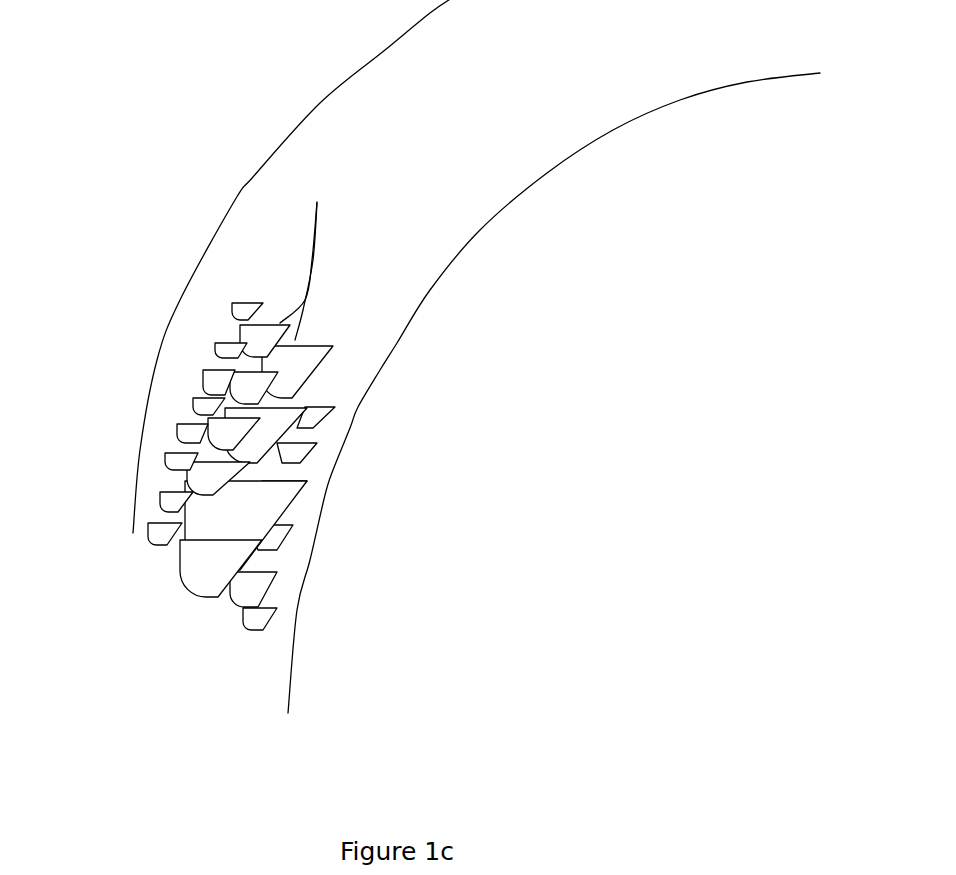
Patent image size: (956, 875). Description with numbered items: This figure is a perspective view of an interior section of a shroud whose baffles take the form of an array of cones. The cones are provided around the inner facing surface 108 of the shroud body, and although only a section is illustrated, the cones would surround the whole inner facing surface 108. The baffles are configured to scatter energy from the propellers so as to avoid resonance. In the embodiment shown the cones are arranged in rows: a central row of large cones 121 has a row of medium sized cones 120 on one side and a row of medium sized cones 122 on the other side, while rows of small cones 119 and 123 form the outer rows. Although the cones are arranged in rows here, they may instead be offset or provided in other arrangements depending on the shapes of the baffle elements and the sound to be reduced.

The inner facing surface 108 is at (410, 248).
The small cones 119 is at (237, 303).
The medium sized cones 120 is at (305, 257).
The large cones 121 is at (238, 513).
The medium sized cones 122 is at (222, 593).
The small cones 123 is at (257, 632).